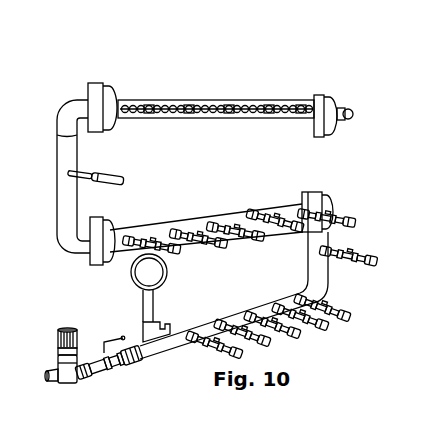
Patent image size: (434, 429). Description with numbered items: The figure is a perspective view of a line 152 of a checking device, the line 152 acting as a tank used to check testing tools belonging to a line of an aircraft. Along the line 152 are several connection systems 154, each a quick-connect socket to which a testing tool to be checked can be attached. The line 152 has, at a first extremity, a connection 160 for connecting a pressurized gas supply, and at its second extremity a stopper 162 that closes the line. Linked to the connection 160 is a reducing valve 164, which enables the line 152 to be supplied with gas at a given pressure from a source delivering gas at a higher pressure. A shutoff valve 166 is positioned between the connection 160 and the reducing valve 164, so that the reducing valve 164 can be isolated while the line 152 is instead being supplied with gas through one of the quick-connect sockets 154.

The line 152 is at (127, 96).
The connection system 154 is at (211, 106).
The stopper 162 is at (342, 113).
The reducing valve 164 is at (63, 330).
The shutoff valve 166 is at (104, 374).
The connection 160 is at (141, 364).